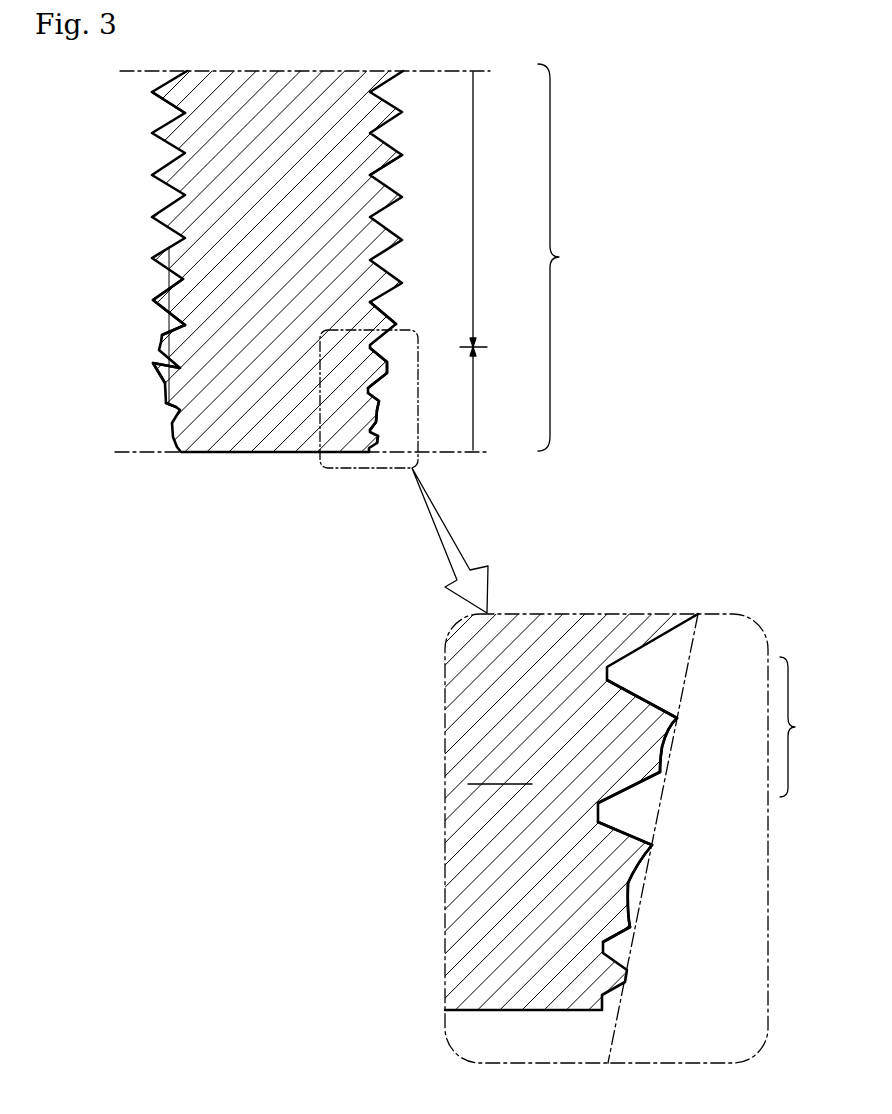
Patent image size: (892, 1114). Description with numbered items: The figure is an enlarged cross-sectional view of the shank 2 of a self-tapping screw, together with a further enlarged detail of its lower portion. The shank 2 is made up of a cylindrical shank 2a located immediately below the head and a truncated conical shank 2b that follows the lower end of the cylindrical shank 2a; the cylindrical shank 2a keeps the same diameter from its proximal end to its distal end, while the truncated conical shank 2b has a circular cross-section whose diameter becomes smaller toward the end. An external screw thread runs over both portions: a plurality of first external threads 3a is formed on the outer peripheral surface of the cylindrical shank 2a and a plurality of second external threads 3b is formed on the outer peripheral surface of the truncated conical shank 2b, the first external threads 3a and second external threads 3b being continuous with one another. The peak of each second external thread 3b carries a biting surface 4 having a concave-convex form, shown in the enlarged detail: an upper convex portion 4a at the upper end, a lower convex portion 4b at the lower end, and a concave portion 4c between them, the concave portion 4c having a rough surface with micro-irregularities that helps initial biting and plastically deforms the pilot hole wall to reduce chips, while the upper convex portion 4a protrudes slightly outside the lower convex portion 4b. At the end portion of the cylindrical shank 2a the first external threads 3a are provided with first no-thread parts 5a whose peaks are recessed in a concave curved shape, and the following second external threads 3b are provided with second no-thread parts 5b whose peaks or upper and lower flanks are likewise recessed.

The shank 2 is at (446, 563).
The cylindrical shank 2a is at (483, 209).
The truncated conical shank 2b is at (500, 565).
The first external threads 3a is at (393, 232).
The second external threads 3b is at (377, 432).
The biting surface 4 is at (377, 415).
The upper convex portion 4a is at (650, 847).
The lower convex portion 4b is at (626, 930).
The concave portion 4c is at (628, 882).
The first no-thread parts 5a is at (150, 300).
The second no-thread parts 5b is at (152, 364).